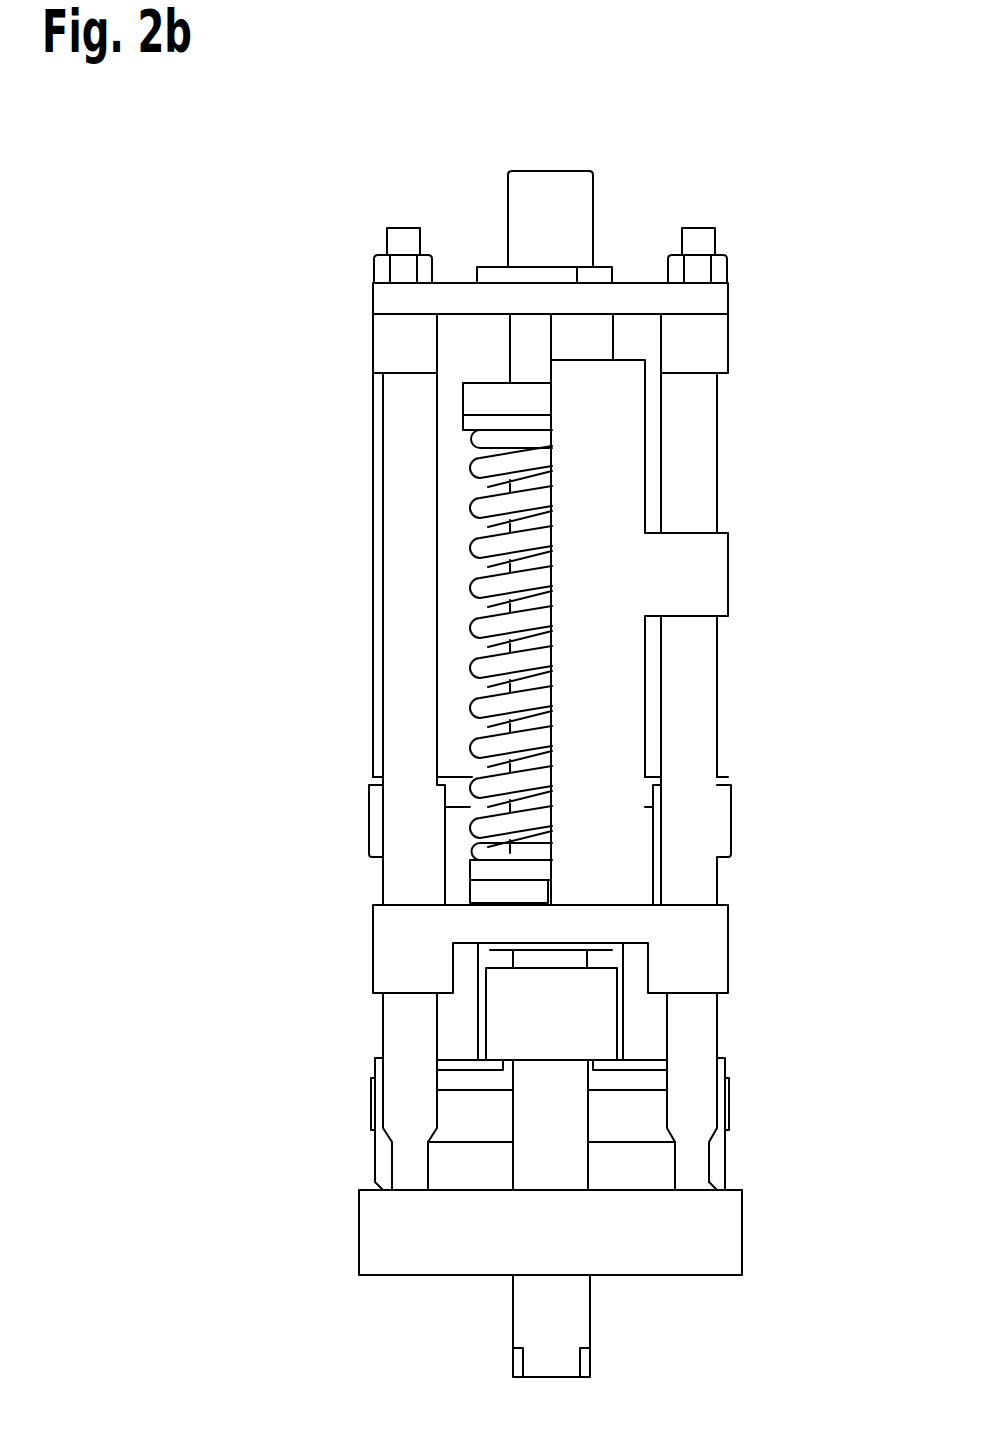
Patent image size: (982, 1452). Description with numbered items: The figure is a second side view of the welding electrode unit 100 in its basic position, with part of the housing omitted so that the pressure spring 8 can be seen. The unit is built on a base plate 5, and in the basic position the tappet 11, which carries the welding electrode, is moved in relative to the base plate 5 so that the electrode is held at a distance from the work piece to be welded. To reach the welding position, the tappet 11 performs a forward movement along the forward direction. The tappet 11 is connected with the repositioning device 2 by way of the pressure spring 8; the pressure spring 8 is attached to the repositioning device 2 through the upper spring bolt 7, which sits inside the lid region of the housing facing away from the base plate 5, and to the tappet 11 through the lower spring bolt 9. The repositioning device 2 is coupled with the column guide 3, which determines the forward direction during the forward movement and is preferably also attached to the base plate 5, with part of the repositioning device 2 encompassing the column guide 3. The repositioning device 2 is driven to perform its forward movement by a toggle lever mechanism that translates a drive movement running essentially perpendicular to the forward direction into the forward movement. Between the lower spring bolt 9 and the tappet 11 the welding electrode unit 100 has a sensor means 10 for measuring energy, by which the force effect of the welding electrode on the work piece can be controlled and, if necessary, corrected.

The welding electrode unit 100 is at (244, 477).
The repositioning device 2 is at (607, 442).
The column guide 3 is at (687, 716).
The base plate 5 is at (715, 1240).
The upper spring bolt 7 is at (517, 405).
The pressure spring 8 is at (485, 670).
The lower spring bolt 9 is at (517, 898).
The sensor means 10 is at (587, 1032).
The tappet 11 is at (573, 1328).